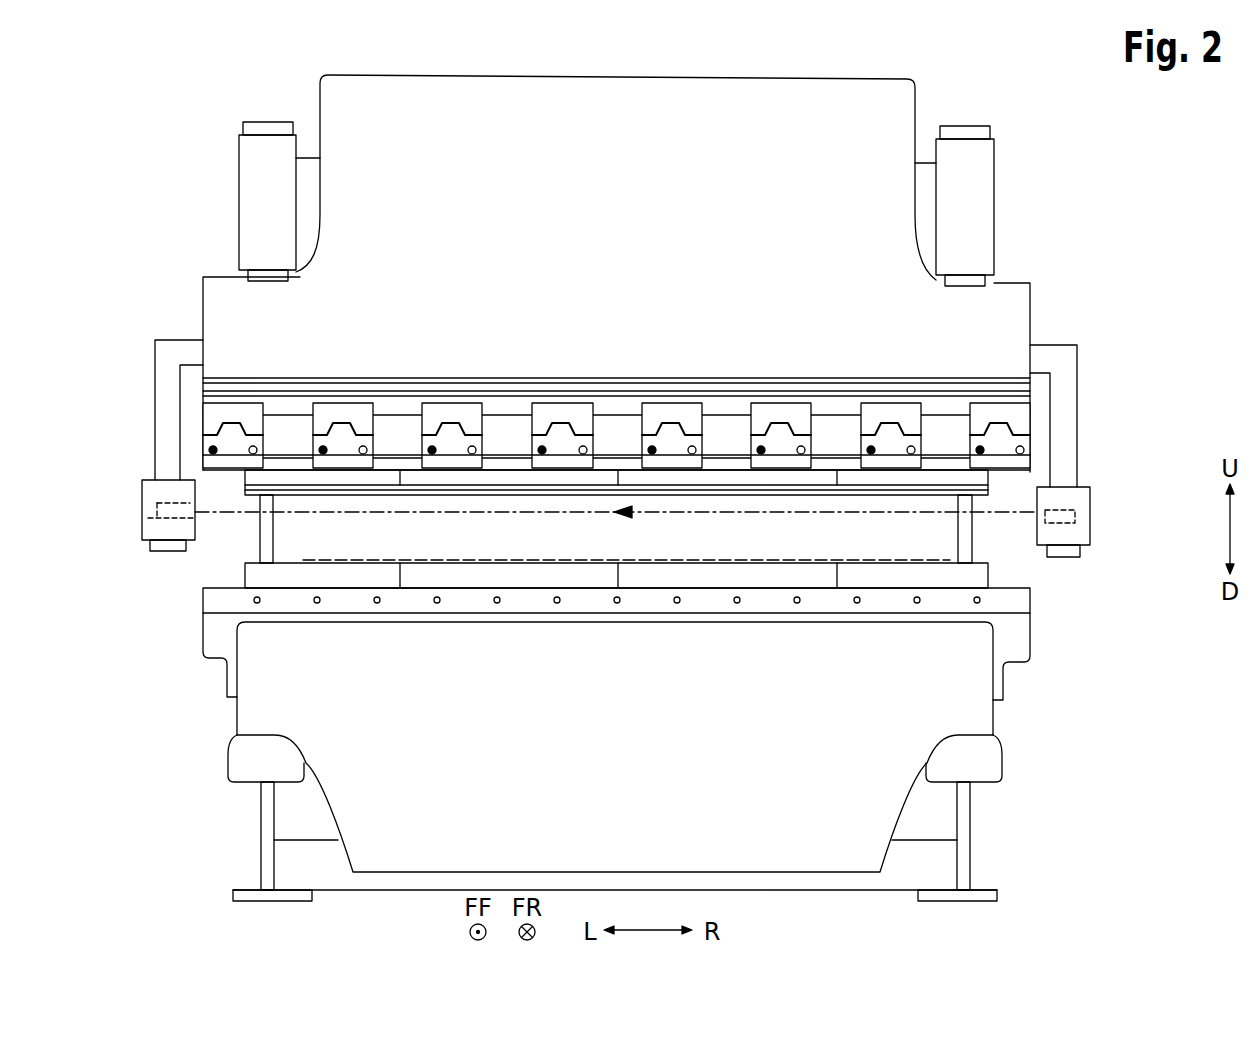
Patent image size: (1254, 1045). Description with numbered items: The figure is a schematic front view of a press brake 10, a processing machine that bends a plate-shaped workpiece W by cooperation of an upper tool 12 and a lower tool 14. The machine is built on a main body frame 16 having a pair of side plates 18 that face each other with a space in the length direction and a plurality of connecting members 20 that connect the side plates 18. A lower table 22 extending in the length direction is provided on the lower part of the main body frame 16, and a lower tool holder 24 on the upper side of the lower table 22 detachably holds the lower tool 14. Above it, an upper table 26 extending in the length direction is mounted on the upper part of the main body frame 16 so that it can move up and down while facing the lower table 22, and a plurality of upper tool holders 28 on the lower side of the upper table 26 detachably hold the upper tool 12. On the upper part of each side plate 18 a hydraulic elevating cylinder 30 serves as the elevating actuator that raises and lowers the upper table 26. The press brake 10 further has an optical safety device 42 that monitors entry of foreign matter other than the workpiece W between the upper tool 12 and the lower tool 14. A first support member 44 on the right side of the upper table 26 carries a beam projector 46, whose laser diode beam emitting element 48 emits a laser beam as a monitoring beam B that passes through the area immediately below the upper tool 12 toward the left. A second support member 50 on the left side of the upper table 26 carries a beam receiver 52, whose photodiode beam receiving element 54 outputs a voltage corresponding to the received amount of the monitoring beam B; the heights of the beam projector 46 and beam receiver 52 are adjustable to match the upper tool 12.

The press brake 10 is at (1046, 176).
The upper tool 12 is at (507, 478).
The lower tool 14 is at (650, 582).
The main body frame 16 is at (256, 808).
The side plates 18 is at (258, 546).
The connecting members 20 is at (862, 886).
The lower table 22 is at (612, 785).
The lower tool holder 24 is at (587, 605).
The upper table 26 is at (612, 280).
The upper tool holders 28 is at (230, 410).
The hydraulic elevating cylinder 30 is at (264, 120).
The optical safety device 42 is at (1094, 418).
The first support member 44 is at (1060, 345).
The beam projector 46 is at (1090, 497).
The beam emitting element 48 is at (1090, 520).
The second support member 50 is at (171, 340).
The beam receiver 52 is at (142, 490).
The beam receiving element 54 is at (142, 512).
The workpiece W is at (641, 558).
The monitoring beam B is at (794, 515).